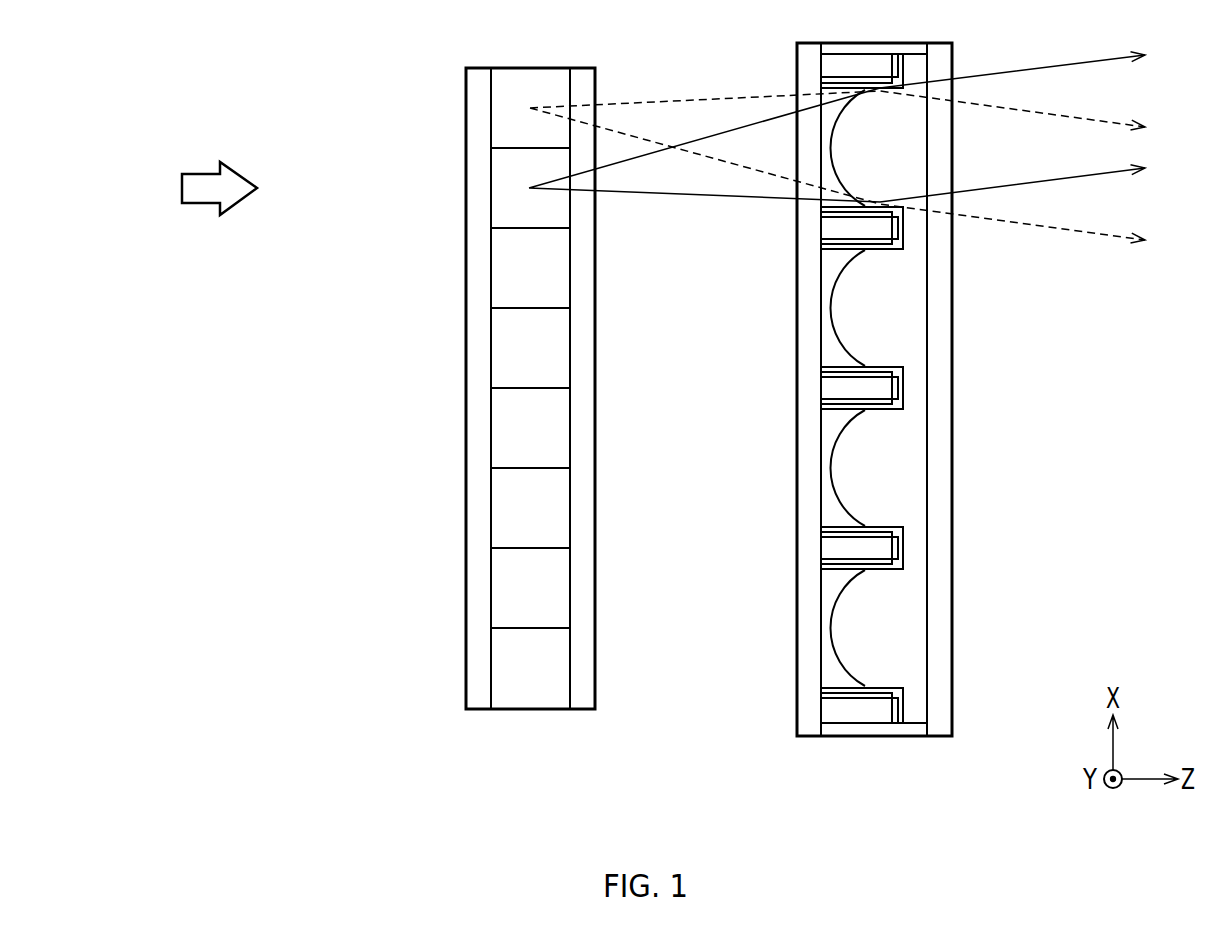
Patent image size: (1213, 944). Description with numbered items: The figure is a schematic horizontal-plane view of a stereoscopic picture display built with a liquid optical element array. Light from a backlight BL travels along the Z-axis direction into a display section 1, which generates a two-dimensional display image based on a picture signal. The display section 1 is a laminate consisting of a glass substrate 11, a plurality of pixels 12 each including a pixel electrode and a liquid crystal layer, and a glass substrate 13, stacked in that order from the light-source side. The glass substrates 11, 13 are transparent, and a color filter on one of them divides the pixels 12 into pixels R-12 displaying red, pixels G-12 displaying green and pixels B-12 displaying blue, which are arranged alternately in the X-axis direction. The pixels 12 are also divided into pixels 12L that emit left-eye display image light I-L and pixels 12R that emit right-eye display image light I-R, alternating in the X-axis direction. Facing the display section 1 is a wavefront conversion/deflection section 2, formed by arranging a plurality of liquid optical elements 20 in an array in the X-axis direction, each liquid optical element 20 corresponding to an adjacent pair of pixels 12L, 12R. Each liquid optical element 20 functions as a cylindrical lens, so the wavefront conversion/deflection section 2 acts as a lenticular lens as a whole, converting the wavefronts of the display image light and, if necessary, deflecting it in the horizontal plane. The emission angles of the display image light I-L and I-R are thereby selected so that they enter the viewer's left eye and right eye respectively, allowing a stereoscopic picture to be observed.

The display section 1 is at (595, 774).
The glass substrate 11 is at (480, 700).
The pixels 12 is at (570, 712).
The glass substrate 13 is at (583, 700).
The pixels for left eye 12L is at (495, 586).
The pixels for right eye 12R is at (495, 666).
The pixels displaying red R-12 is at (389, 73).
The pixels displaying green G-12 is at (389, 233).
The pixels displaying blue B-12 is at (389, 393).
The wavefront conversion/deflection section 2 is at (952, 744).
The liquid optical element 20 is at (788, 45).
The left-eye display image light I-L is at (681, 98).
The right-eye display image light I-R is at (687, 194).
The backlight BL is at (203, 205).